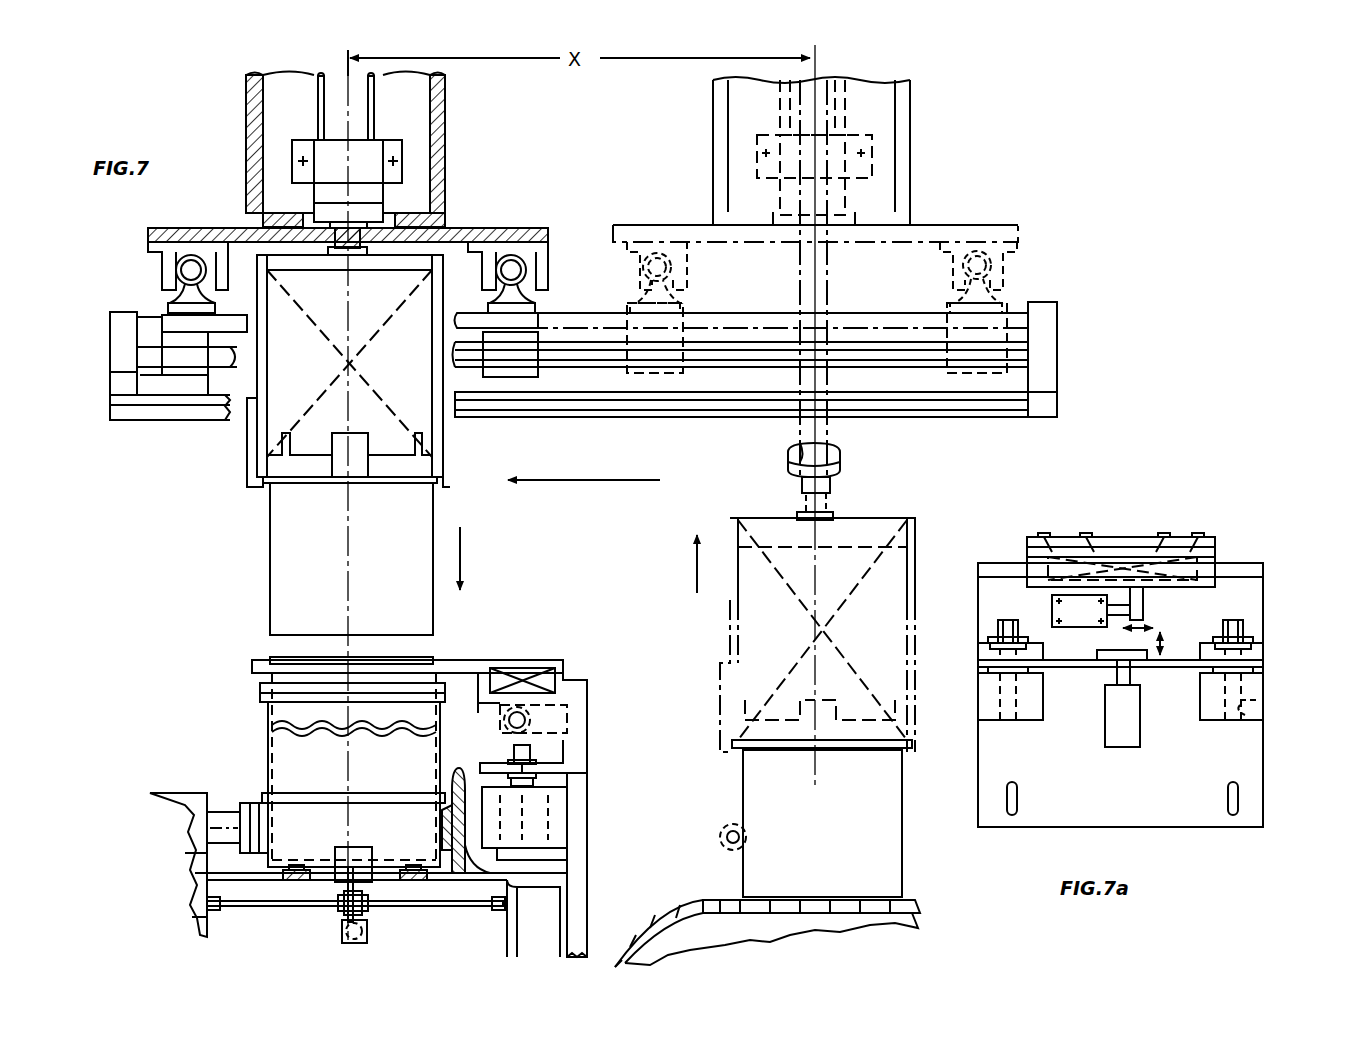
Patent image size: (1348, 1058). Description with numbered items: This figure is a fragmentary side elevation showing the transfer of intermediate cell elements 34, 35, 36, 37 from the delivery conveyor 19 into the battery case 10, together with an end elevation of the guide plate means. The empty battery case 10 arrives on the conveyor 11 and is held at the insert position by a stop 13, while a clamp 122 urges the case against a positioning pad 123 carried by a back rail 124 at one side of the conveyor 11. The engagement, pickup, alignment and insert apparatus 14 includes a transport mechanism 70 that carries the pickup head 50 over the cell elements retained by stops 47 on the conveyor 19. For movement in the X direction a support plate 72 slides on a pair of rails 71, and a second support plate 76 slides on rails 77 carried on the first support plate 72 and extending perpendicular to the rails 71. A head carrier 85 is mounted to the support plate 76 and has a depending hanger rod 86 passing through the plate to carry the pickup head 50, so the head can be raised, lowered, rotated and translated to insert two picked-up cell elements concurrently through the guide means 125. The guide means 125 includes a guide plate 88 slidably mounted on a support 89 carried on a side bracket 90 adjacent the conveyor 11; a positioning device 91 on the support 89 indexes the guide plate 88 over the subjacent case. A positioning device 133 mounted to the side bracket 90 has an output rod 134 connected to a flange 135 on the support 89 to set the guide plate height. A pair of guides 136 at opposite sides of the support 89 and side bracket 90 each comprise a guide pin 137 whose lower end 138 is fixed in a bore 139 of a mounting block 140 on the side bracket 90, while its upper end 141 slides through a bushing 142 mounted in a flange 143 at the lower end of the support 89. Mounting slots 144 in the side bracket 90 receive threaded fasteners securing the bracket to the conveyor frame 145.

In FIG. 7, the transport mechanism 70 is at (238, 222).
In FIG. 7, the head carrier 85 is at (402, 148).
In FIG. 7, the second support plate 76 is at (468, 224).
In FIG. 7, the rails 77 is at (182, 272).
In FIG. 7, the support plate 72 is at (545, 328).
In FIG. 7, the rails 71 is at (570, 353).
In FIG. 7, the element engagement, pickup, alignment and insert apparatus 14 is at (918, 195).
In FIG. 7, the hanger rod 86 is at (830, 431).
In FIG. 7, the pickup head 50 is at (970, 500).
In FIG. 7, the intermediate cell element 34 is at (517, 576).
In FIG. 7, the intermediate cell element 35 is at (517, 576).
In FIG. 7, the intermediate cell element 36 is at (517, 576).
In FIG. 7, the intermediate cell element 37 is at (270, 578).
In FIG. 7, the guide plate 88 is at (427, 657).
In FIG. 7A, the guide plate 88 is at (1215, 545).
In FIG. 7, the guide means 125 is at (578, 658).
In FIG. 7A, the guide means 125 is at (1255, 560).
In FIG. 7, the support 89 is at (587, 682).
In FIG. 7A, the support 89 is at (1265, 580).
In FIG. 7, the positioning device 91 is at (500, 718).
In FIG. 7A, the positioning device 91 is at (1052, 605).
In FIG. 7, the upper end of guide pin 141 is at (514, 753).
In FIG. 7A, the upper end of guide pin 141 is at (1245, 623).
In FIG. 7, the flange 143 is at (536, 775).
In FIG. 7A, the flange 143 is at (1258, 655).
In FIG. 7, the bushing 142 is at (540, 787).
In FIG. 7A, the bushing 142 is at (1253, 642).
In FIG. 7, the side bracket 90 is at (590, 870).
In FIG. 7A, the side bracket 90 is at (1265, 785).
In FIG. 7, the positioning device 133 is at (530, 855).
In FIG. 7A, the positioning device 133 is at (1115, 728).
In FIG. 7, the battery case 10 is at (255, 718).
In FIG. 7, the clamp 122 is at (256, 810).
In FIG. 7, the stop 13 is at (345, 865).
In FIG. 7, the conveyor 11 is at (412, 882).
In FIG. 7, the back rail 124 is at (470, 855).
In FIG. 7, the positioning pad 123 is at (448, 852).
In FIG. 7, the conveyor frame 145 is at (558, 932).
In FIG. 7, the stops 47 is at (722, 835).
In FIG. 7, the conveyor 19 is at (718, 898).
In FIG. 7A, the guides 136 is at (995, 630).
In FIG. 7A, the guide pin 137 is at (1250, 672).
In FIG. 7A, the lower end of guide pin 138 is at (1258, 693).
In FIG. 7A, the bore 139 is at (1250, 712).
In FIG. 7A, the mounting block 140 is at (978, 703).
In FIG. 7A, the output rod 134 is at (1117, 667).
In FIG. 7A, the flange 135 is at (1148, 660).
In FIG. 7A, the mounting slots 144 is at (1235, 812).